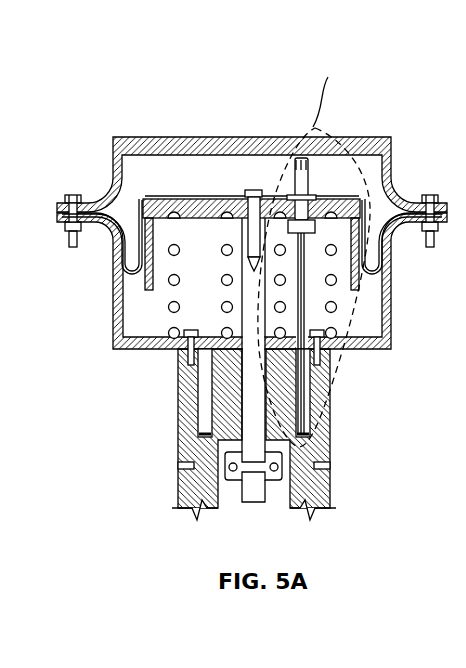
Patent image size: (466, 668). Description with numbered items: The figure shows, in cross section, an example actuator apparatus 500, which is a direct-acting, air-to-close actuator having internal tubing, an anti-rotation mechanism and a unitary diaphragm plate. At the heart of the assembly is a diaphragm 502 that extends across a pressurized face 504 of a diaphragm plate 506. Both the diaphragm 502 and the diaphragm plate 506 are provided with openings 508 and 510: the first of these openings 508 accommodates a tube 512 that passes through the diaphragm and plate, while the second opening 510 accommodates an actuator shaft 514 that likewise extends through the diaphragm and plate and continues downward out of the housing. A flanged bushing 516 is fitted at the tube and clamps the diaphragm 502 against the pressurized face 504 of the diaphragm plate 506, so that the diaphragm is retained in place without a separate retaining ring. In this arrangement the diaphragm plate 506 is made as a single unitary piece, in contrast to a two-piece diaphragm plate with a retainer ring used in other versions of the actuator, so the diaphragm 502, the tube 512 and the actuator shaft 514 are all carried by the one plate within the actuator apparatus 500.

The actuator apparatus 500 is at (134, 36).
The diaphragm 502 is at (381, 226).
The pressurized face 504 is at (163, 199).
The diaphragm plate 506 is at (359, 287).
The opening 508 is at (371, 211).
The opening 510 is at (241, 195).
The tube 512 is at (295, 138).
The actuator shaft 514 is at (252, 492).
The flanged bushing 516 is at (314, 198).